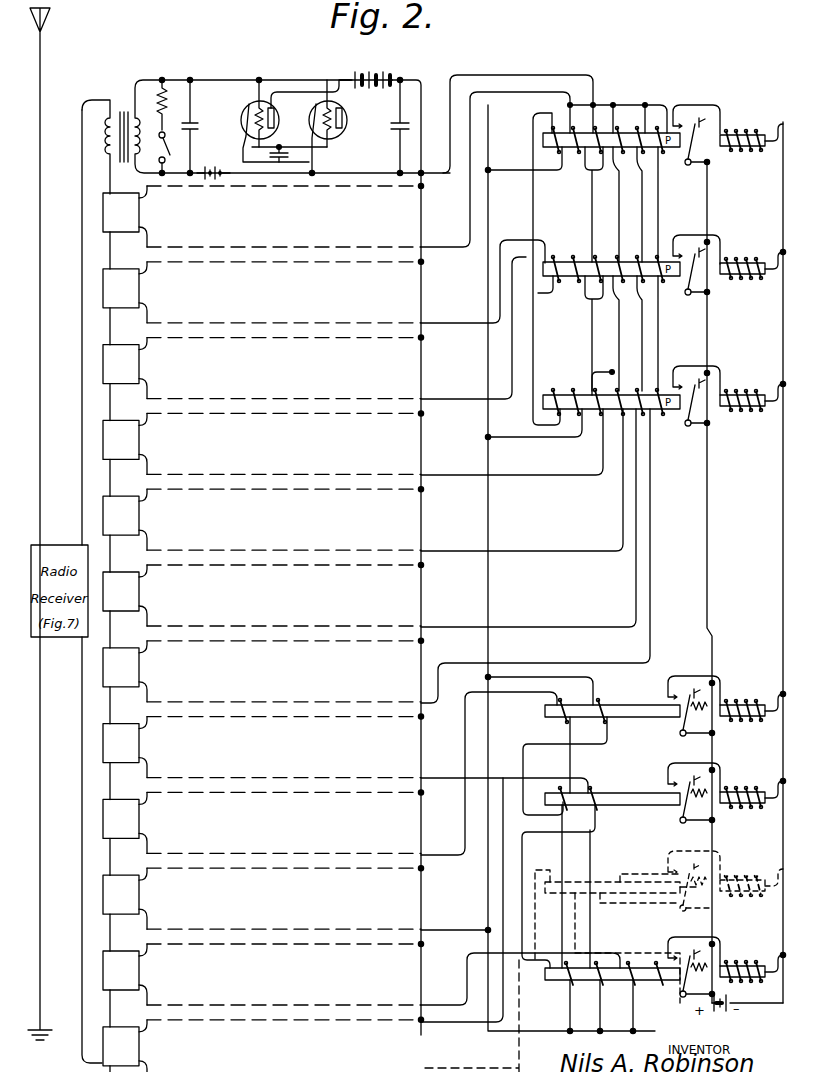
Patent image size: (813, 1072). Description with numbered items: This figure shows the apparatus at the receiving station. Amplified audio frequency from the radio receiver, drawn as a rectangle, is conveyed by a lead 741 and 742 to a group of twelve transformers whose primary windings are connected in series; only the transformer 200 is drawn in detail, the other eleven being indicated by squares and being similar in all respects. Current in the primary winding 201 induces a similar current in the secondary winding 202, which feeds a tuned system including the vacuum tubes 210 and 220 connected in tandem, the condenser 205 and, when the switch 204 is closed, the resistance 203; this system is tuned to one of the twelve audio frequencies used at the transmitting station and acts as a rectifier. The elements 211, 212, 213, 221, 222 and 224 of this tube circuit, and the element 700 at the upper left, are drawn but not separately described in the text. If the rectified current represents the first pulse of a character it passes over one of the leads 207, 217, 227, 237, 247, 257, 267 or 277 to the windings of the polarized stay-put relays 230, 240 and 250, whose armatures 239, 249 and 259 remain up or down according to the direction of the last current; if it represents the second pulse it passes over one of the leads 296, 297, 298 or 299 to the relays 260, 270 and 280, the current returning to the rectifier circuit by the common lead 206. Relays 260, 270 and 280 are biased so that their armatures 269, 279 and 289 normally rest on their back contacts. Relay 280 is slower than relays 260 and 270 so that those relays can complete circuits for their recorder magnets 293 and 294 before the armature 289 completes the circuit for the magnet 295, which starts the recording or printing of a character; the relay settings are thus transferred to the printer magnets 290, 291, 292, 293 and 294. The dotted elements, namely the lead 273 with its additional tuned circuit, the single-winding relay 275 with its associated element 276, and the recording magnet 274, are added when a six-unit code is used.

The antenna 700 is at (48, 16).
The lead 741 is at (80, 187).
The lead 742 is at (80, 882).
The transformer 200 is at (124, 112).
The primary winding 201 is at (103, 112).
The secondary winding 202 is at (140, 112).
The resistance 203 is at (170, 90).
The switch 204 is at (170, 135).
The condenser 205 is at (193, 122).
The common lead 206 is at (405, 76).
The lead 207 is at (548, 74).
The vacuum tube 210 is at (262, 102).
The grid 211 is at (244, 134).
The battery 212 is at (235, 145).
The plate 213 is at (276, 110).
The vacuum tube 220 is at (330, 142).
The condenser 221 is at (268, 140).
The plate 222 is at (343, 115).
The condenser 224 is at (392, 134).
The lead 217 is at (462, 246).
The lead 227 is at (470, 318).
The lead 237 is at (472, 396).
The lead 247 is at (476, 471).
The lead 257 is at (476, 548).
The lead 267 is at (476, 623).
The lead 277 is at (476, 658).
The lead 296 is at (482, 681).
The lead 297 is at (462, 858).
The lead 298 is at (474, 930).
The lead 299 is at (462, 1008).
The lead 273 is at (476, 1068).
The polarized relay 230 is at (537, 136).
The armature 239 is at (700, 159).
The polarized relay 240 is at (554, 244).
The armature 249 is at (700, 290).
The polarized relay 250 is at (540, 399).
The armature 259 is at (698, 387).
The relay 260 is at (542, 712).
The armature 269 is at (679, 735).
The relay 270 is at (648, 806).
The armature 279 is at (692, 792).
The recording magnet 274 is at (742, 880).
The relay 275 is at (650, 883).
The relay armature 276 is at (686, 870).
The relay 280 is at (560, 986).
The armature 289 is at (710, 949).
The printer magnet 290 is at (751, 131).
The printer magnet 291 is at (745, 265).
The printer magnet 292 is at (746, 395).
The recorder magnet 293 is at (744, 705).
The recorder magnet 294 is at (744, 792).
The magnet 295 is at (746, 966).